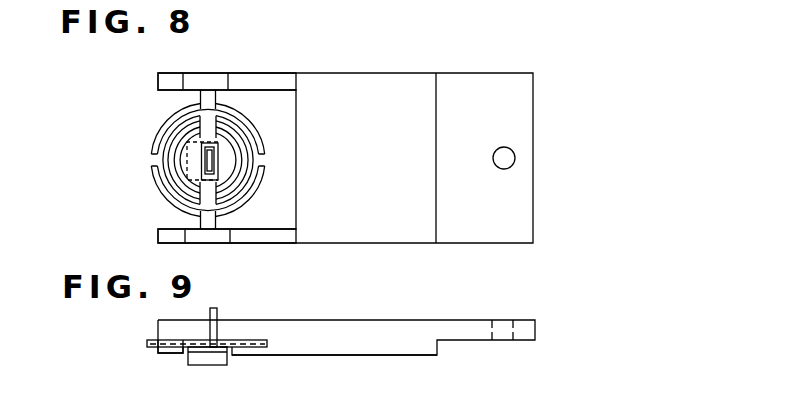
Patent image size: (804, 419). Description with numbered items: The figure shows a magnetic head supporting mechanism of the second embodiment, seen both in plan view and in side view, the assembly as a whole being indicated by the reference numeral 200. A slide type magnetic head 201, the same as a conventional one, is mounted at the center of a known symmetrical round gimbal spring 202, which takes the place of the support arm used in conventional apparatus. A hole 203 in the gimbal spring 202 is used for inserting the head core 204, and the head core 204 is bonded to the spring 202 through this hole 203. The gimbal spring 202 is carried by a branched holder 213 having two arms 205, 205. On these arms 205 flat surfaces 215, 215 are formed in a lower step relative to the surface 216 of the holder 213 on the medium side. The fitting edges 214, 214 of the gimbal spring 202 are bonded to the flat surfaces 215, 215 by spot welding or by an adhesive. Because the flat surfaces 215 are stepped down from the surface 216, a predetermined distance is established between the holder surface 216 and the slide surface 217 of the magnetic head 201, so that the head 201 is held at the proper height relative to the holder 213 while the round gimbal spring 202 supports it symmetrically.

In FIG. 8, the identification card 200 is at (600, 150).
In FIG. 9, the identification card 200 is at (520, 395).
In FIG. 9, the magnetic head 201 is at (208, 357).
In FIG. 8, the gimbal spring 202 is at (157, 188).
In FIG. 9, the gimbal spring 202 is at (147, 345).
In FIG. 8, the hole 203 is at (218, 152).
In FIG. 8, the head core 204 is at (206, 154).
In FIG. 9, the head core 204 is at (217, 306).
In FIG. 8, the arms 205 is at (258, 80).
In FIG. 8, the branched holder 213 is at (472, 73).
In FIG. 9, the branched holder 213 is at (463, 320).
In FIG. 8, the fitting edges 214 is at (217, 73).
In FIG. 9, the fitting edges 214 is at (190, 350).
In FIG. 8, the flat surfaces 215 is at (192, 73).
In FIG. 9, the flat surfaces 215 is at (225, 347).
In FIG. 9, the surface 216 is at (373, 355).
In FIG. 9, the slide surface 217 is at (217, 365).